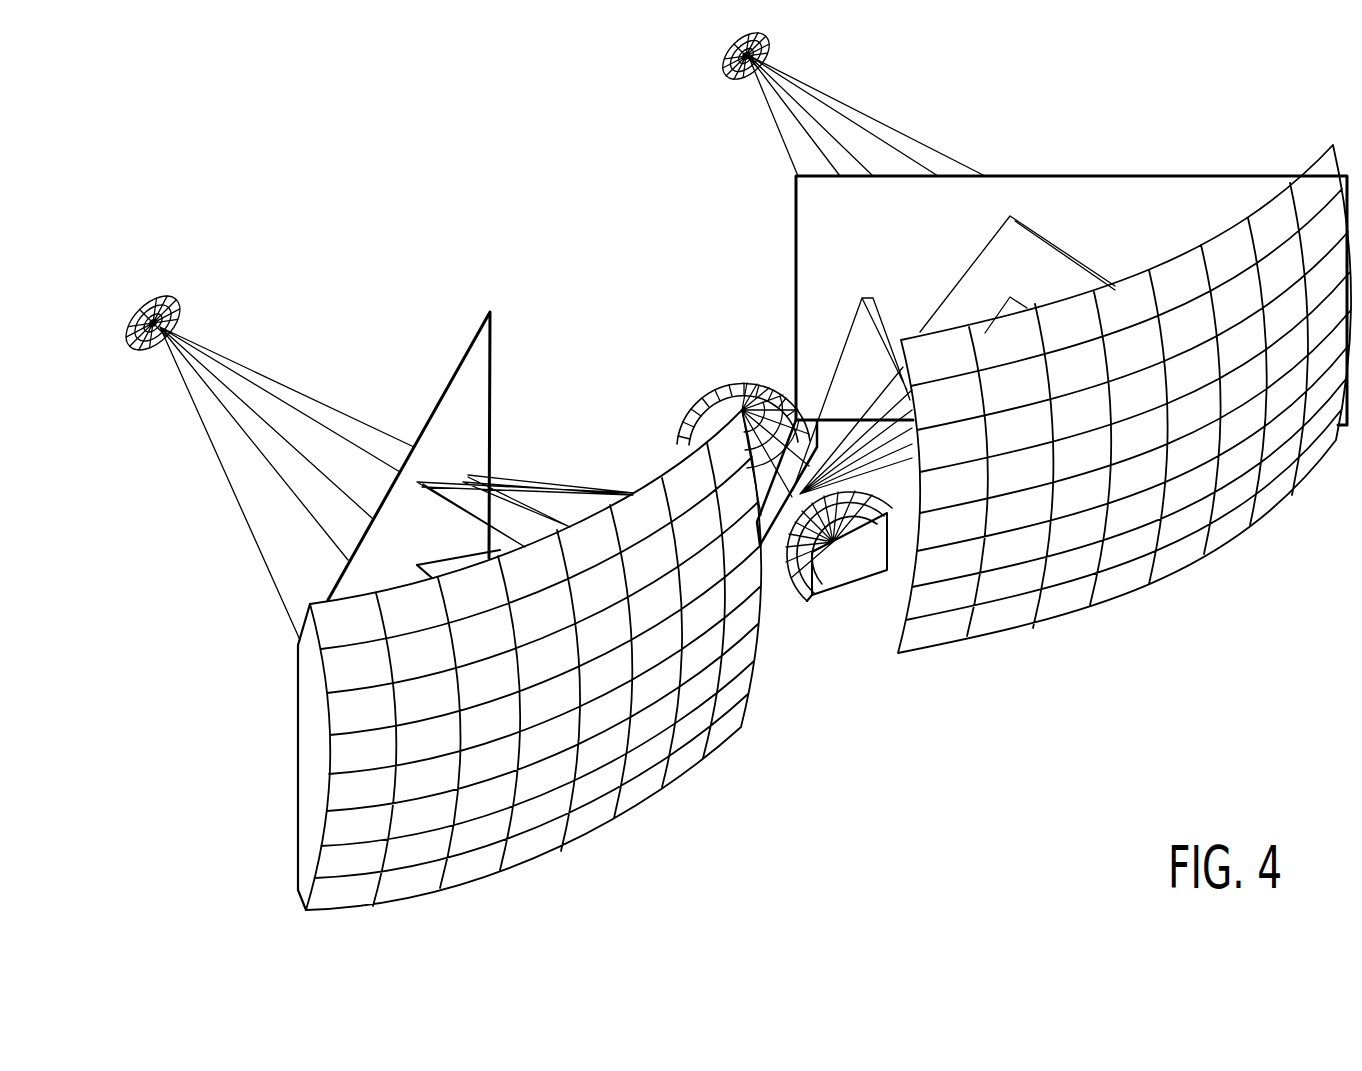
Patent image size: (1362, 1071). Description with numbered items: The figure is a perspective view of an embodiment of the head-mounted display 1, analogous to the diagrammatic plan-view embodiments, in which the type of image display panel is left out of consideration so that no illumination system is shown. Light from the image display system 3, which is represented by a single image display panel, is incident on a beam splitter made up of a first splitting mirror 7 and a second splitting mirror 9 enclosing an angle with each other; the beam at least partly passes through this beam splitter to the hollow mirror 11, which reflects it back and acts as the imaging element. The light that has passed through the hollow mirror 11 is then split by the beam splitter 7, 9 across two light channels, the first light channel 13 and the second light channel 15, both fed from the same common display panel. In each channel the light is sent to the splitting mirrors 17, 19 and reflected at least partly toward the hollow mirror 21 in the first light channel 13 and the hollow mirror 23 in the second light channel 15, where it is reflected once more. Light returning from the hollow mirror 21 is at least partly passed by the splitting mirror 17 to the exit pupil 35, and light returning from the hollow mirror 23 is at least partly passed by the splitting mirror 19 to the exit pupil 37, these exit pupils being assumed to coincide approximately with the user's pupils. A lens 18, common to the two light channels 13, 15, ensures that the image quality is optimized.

The head-mounted display 1 is at (717, 467).
The image display system 3 is at (873, 560).
The first splitting mirror 7 is at (818, 420).
The second splitting mirror 9 is at (775, 540).
The hollow mirror 11 is at (722, 397).
The first light channel 13 is at (422, 598).
The second light channel 15 is at (1016, 366).
The splitting mirror 17 is at (475, 377).
The lens 18 is at (832, 600).
The splitting mirror 19 is at (813, 230).
The hollow mirror 21 is at (682, 760).
The hollow mirror 23 is at (1005, 620).
The exit pupil 35 is at (130, 315).
The exit pupil 37 is at (728, 43).